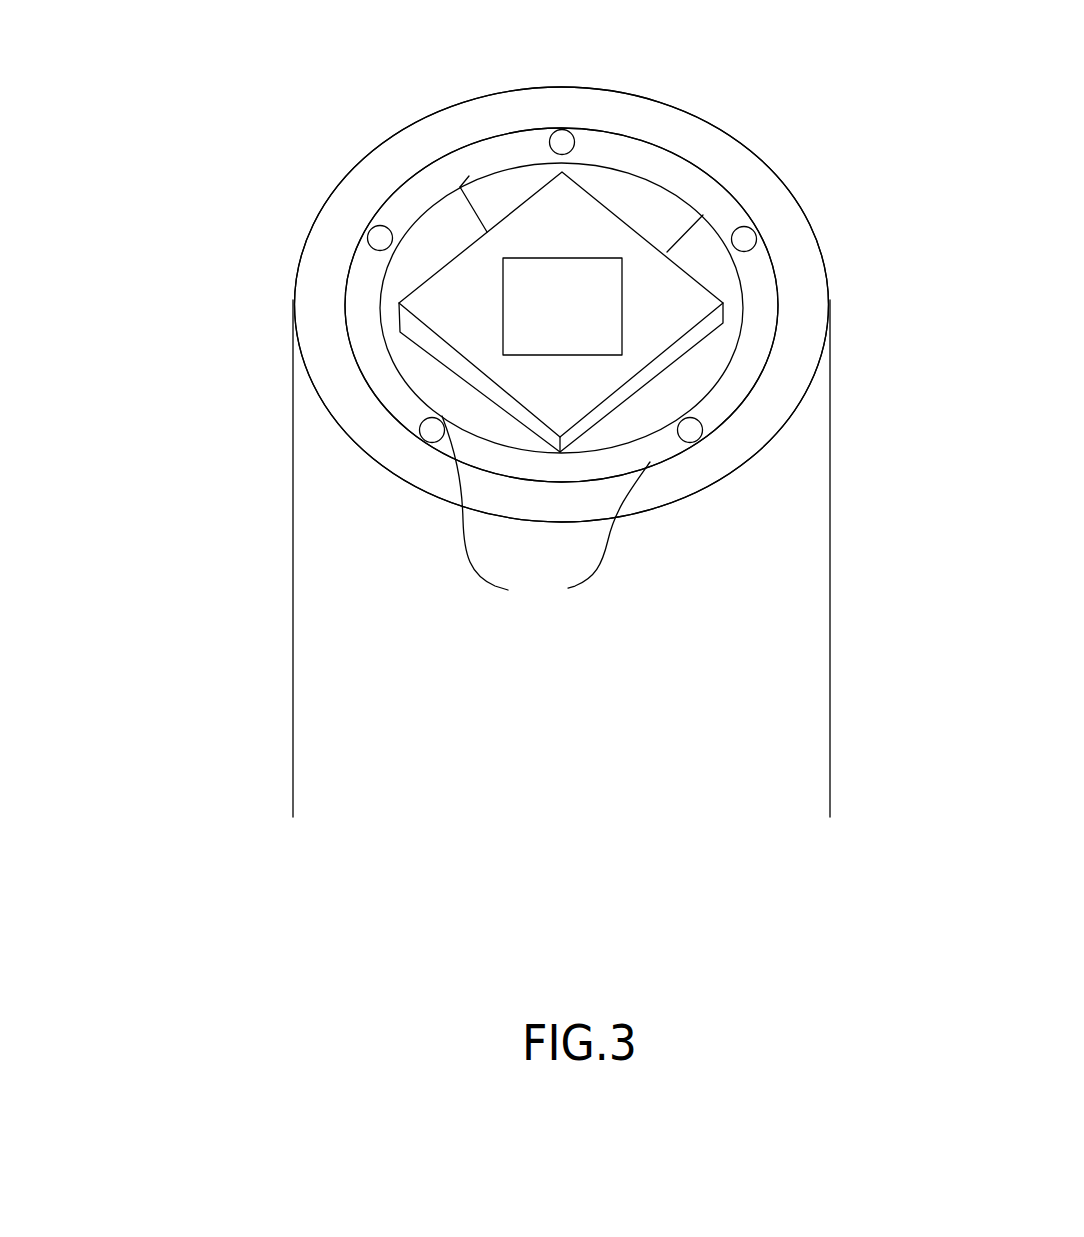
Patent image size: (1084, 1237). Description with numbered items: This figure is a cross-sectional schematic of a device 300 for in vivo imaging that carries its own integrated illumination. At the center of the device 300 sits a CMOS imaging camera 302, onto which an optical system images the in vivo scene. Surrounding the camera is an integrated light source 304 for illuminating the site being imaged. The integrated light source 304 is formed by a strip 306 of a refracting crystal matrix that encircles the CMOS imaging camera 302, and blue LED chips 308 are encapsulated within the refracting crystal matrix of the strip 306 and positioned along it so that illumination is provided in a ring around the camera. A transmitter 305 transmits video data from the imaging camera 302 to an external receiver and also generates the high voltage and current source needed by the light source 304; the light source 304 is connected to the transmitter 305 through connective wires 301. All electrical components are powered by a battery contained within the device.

The device 300 is at (243, 431).
The connective wires 301 is at (468, 185).
The CMOS imaging camera 302 is at (503, 333).
The integrated light source 304 is at (408, 168).
The transmitter 305 is at (530, 195).
The strip 306 is at (752, 347).
The blue LED chips 308 is at (546, 511).